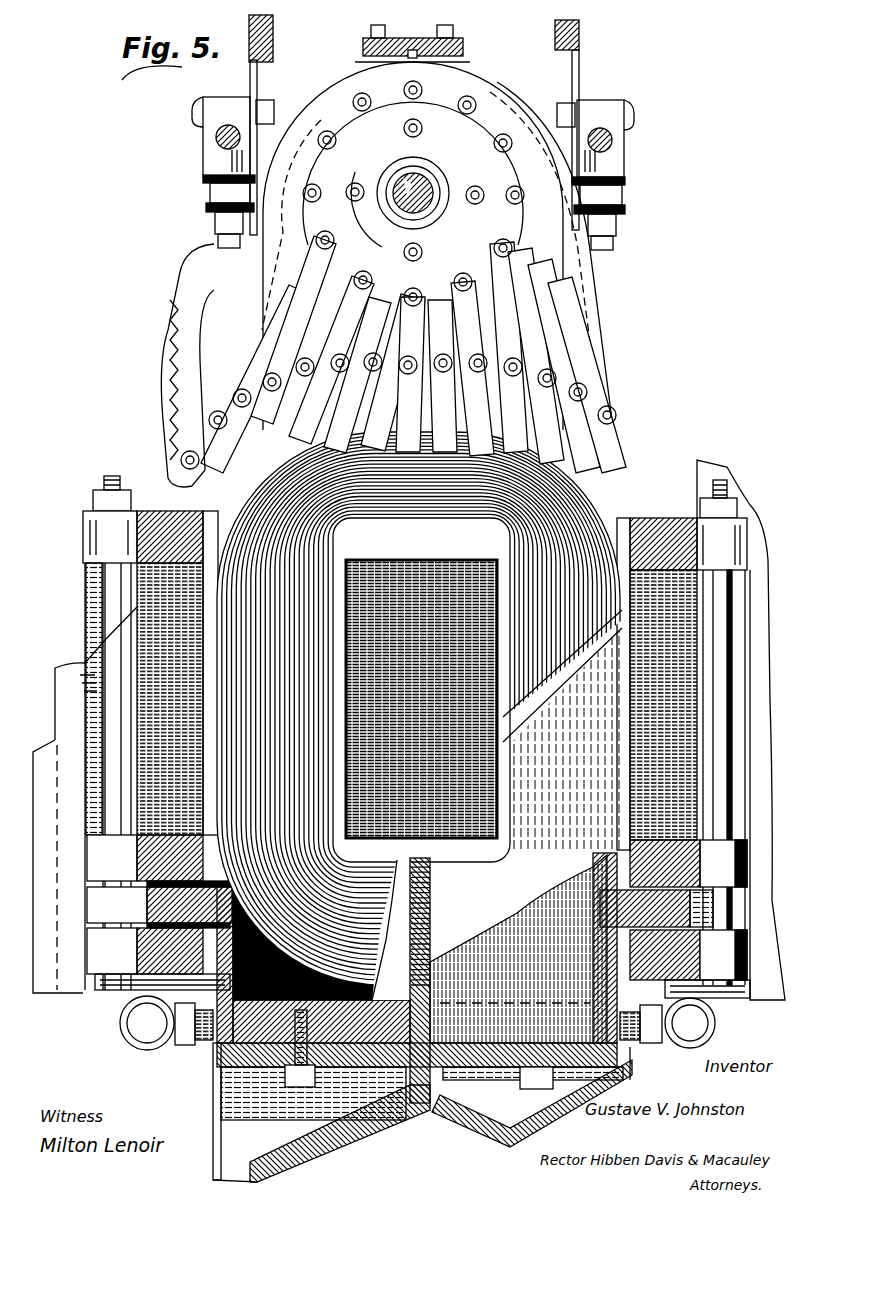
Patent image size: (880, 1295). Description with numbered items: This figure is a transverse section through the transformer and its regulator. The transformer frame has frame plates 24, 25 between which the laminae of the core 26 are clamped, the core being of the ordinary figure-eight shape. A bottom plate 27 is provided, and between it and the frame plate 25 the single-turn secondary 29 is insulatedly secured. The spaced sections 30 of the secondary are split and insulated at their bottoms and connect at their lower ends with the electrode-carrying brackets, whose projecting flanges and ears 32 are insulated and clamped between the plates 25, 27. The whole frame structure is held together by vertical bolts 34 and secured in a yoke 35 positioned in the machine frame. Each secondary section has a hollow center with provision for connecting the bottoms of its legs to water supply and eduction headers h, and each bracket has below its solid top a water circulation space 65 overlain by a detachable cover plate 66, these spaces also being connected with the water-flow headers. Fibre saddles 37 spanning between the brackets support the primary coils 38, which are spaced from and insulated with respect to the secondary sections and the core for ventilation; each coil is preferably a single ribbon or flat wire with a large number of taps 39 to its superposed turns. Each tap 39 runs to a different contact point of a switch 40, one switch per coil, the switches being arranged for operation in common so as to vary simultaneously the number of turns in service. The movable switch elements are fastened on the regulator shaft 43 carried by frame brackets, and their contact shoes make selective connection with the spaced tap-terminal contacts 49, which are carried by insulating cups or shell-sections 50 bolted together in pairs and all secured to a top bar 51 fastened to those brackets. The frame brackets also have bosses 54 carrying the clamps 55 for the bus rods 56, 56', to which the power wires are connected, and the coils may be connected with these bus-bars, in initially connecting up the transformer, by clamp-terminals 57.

The frame plate 24 is at (700, 545).
The frame plate 25 is at (699, 872).
The core 26 is at (700, 690).
The bottom plate 27 is at (703, 960).
The single-turn secondary 29 is at (522, 1050).
The secondary sections 30 is at (574, 872).
The flanges and ears 32 is at (126, 1004).
The vertical bolts 34 is at (110, 478).
The yoke 35 is at (56, 676).
The fibre saddles 37 is at (215, 1098).
The primary coils 38 is at (214, 502).
The taps 39 is at (262, 330).
The switch 40 is at (519, 88).
The regulator shaft 43 is at (433, 178).
The tap-terminal contacts 49 is at (327, 135).
The insulating cups or shell-sections 50 is at (360, 70).
The top bar 51 is at (363, 45).
The bosses 54 is at (210, 190).
The clamps 55 is at (212, 163).
The bus rod 56 is at (216, 125).
The bus rod 56' is at (618, 125).
The clamp-terminals 57 is at (172, 320).
The water circulation space 65 is at (255, 1103).
The detachable cover plate 66 is at (216, 1082).
The water supply and eduction headers h is at (716, 1030).